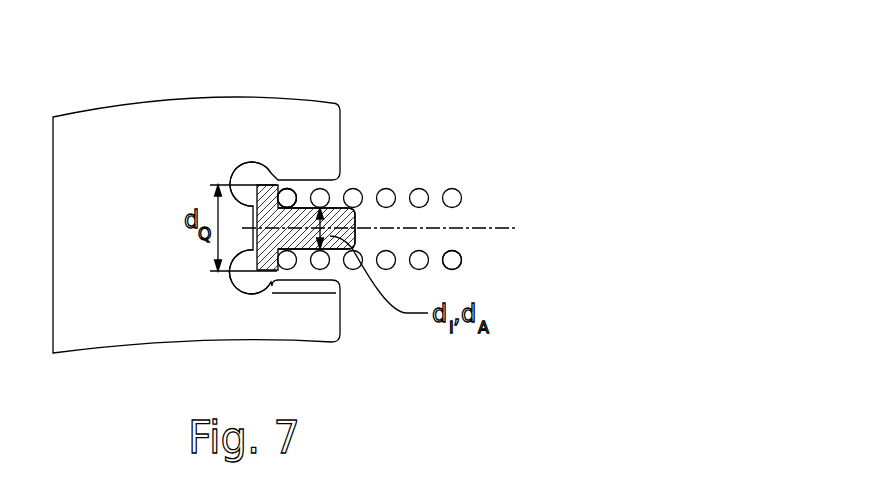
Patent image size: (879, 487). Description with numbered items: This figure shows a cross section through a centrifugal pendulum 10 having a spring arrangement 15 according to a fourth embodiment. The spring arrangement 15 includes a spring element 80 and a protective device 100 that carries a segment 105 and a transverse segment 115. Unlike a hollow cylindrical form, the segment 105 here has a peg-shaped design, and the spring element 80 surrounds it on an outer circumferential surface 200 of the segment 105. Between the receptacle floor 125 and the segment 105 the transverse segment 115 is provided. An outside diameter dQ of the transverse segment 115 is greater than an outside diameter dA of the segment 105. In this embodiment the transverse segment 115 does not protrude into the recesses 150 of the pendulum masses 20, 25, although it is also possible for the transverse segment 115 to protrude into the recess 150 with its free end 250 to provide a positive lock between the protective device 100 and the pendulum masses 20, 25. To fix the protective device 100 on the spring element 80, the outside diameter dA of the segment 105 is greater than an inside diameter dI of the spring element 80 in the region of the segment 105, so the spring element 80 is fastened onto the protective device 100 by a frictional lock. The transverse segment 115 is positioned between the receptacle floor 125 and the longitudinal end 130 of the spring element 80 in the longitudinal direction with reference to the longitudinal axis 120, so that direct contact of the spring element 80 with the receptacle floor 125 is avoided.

The centrifugal pendulum 10 is at (344, 72).
The spring arrangement 15 is at (360, 158).
The pendulum mass 20 is at (196, 198).
The pendulum mass 25 is at (82, 127).
The spring element 80 is at (456, 262).
The protective device 100 is at (353, 196).
The segment 105 is at (305, 297).
The transverse segment 115 is at (262, 248).
The longitudinal axis 120 is at (505, 231).
The receptacle floor 125 is at (258, 270).
The longitudinal end 130 is at (288, 188).
The recess 150 is at (285, 187).
The outer circumferential surface 200 is at (338, 249).
The free end 250 is at (258, 176).